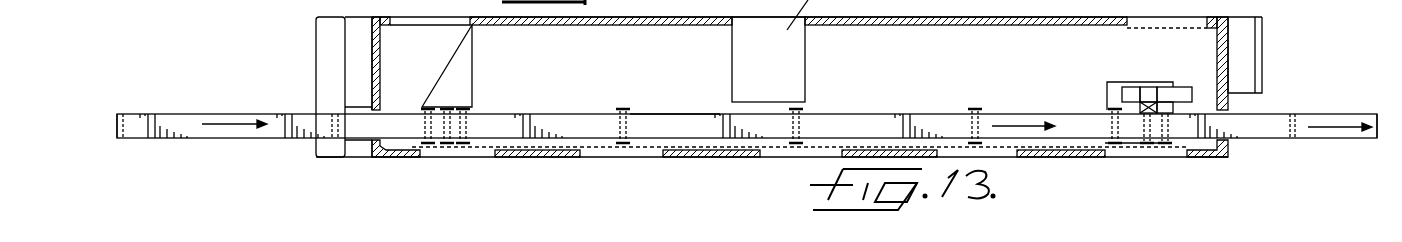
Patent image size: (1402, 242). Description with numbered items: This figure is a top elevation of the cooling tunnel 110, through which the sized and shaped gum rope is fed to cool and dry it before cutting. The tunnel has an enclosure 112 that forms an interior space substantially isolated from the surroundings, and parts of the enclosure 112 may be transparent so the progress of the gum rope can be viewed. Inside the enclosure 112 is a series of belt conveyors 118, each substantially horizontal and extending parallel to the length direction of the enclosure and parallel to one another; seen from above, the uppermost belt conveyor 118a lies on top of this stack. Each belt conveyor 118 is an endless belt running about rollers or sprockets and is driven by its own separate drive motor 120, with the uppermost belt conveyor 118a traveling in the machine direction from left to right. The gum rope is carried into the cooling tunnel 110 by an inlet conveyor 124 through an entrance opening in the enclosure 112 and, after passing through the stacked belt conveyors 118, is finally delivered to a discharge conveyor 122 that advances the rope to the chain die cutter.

The cooling tunnel 110 is at (294, 59).
The enclosure 112 is at (614, 35).
The belt conveyors 118 is at (880, 105).
The uppermost belt conveyor 118a is at (660, 117).
The drive motor 120 is at (1183, 93).
The discharge conveyor 122 is at (1273, 122).
The inlet conveyor 124 is at (187, 127).